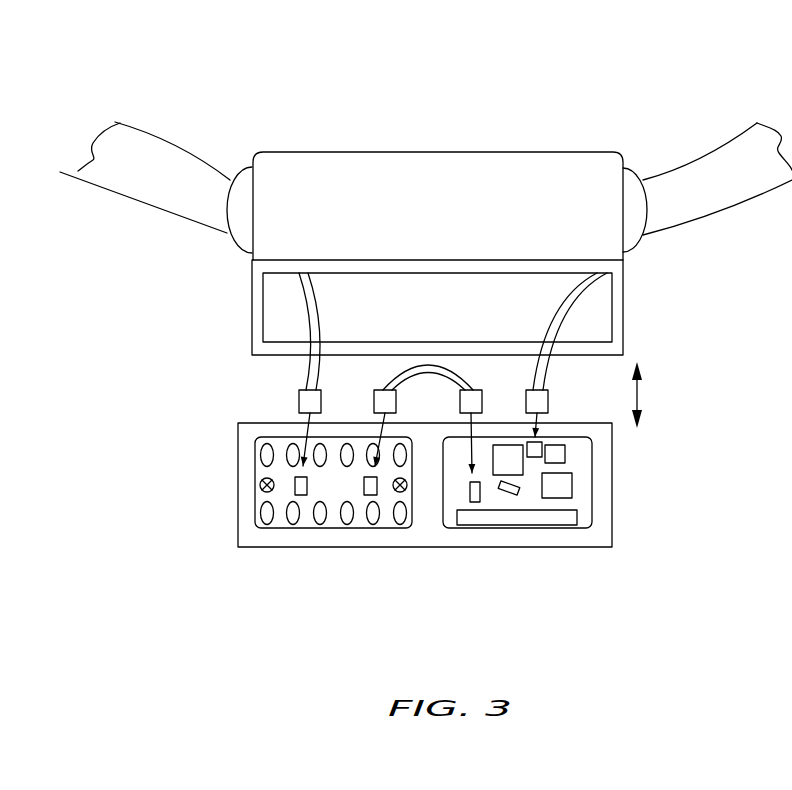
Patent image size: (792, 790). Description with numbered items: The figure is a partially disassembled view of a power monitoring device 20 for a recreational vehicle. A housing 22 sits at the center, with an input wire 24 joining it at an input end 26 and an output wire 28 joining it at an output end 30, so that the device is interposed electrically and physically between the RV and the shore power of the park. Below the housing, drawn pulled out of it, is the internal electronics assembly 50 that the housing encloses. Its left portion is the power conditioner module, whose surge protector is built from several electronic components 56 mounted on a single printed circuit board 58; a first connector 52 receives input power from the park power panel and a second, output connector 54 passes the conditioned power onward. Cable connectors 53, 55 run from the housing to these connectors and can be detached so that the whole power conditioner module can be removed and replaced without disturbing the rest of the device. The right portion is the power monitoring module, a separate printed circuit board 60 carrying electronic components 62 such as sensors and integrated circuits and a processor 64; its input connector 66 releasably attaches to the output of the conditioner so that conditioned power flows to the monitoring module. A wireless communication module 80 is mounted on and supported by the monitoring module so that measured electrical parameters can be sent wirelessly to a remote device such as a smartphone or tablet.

The wearable device 20 is at (493, 73).
The housing 22 is at (403, 165).
The first strap 24 is at (175, 187).
The first strap connector 26 is at (215, 247).
The second strap 28 is at (683, 180).
The second strap connector 30 is at (640, 252).
The electronics module 50 is at (248, 505).
The first connector port 52 is at (293, 480).
The first cable connector 53 is at (306, 397).
The second connector port 54 is at (368, 495).
The second cable connector 55 is at (382, 397).
The sensor openings 56 is at (342, 523).
The sensor board 58 is at (382, 518).
The circuit board 60 is at (440, 507).
The electronic components 62 is at (525, 478).
The processor 64 is at (578, 465).
The connector 66 is at (473, 502).
The battery 80 is at (500, 524).